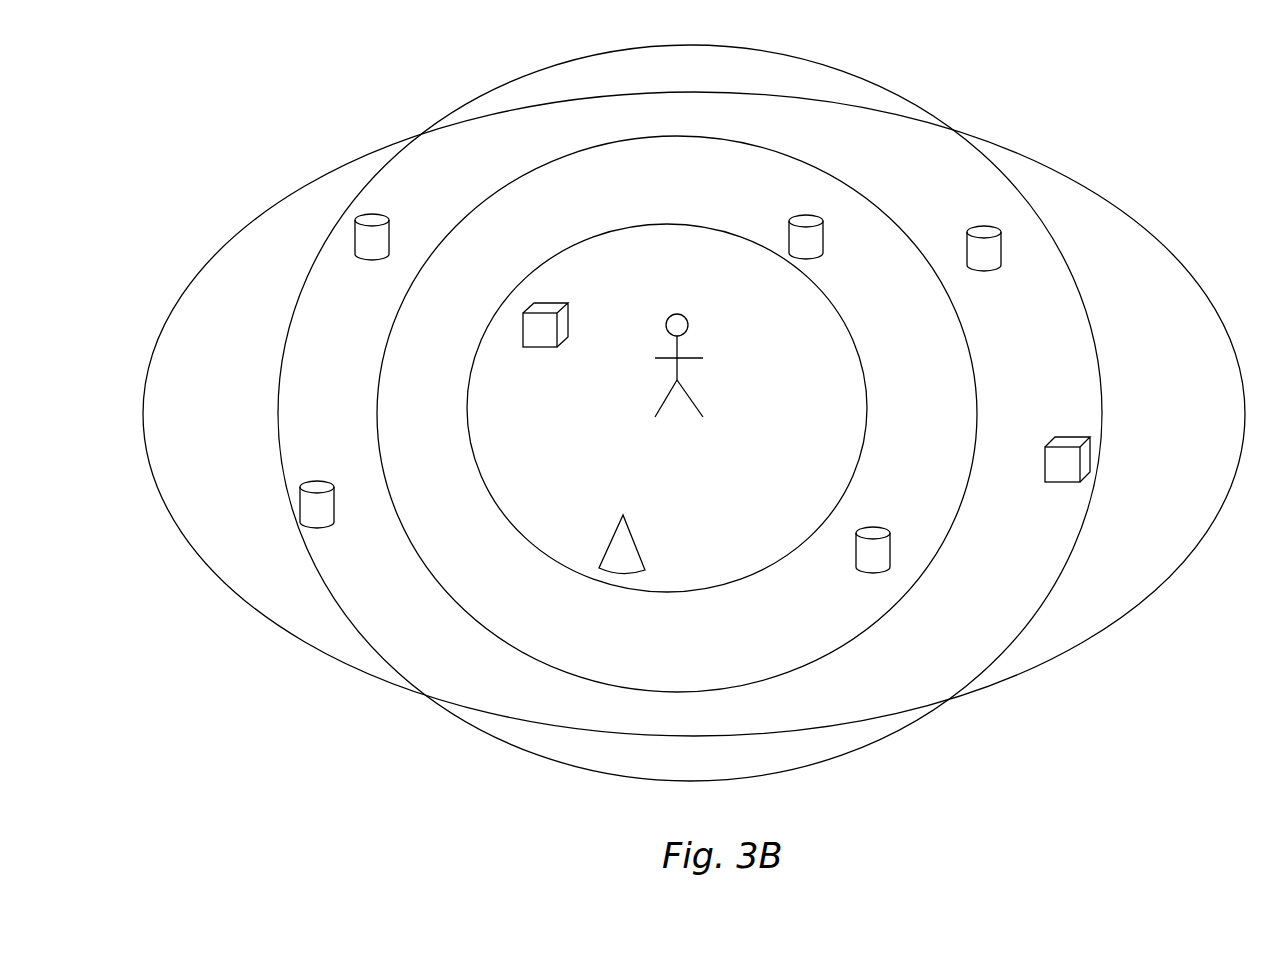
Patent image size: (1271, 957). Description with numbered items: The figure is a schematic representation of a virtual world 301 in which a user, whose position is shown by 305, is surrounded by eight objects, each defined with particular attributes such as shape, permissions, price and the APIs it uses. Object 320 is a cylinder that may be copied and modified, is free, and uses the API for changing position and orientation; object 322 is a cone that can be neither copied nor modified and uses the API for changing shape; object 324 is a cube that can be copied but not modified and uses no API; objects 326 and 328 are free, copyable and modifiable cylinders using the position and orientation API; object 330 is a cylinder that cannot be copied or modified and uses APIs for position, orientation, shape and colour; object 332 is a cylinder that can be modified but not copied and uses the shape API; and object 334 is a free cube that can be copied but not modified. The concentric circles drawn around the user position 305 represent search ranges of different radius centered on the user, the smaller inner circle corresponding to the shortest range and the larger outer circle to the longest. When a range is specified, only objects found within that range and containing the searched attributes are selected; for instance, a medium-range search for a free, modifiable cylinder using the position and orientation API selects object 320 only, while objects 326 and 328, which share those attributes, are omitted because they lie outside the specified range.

The virtual world 301 is at (257, 213).
The user position 305 is at (688, 368).
The object 320 is at (812, 237).
The object 322 is at (622, 547).
The object 324 is at (534, 337).
The object 326 is at (322, 513).
The object 328 is at (368, 247).
The object 330 is at (867, 548).
The object 332 is at (990, 257).
The object 334 is at (1068, 468).